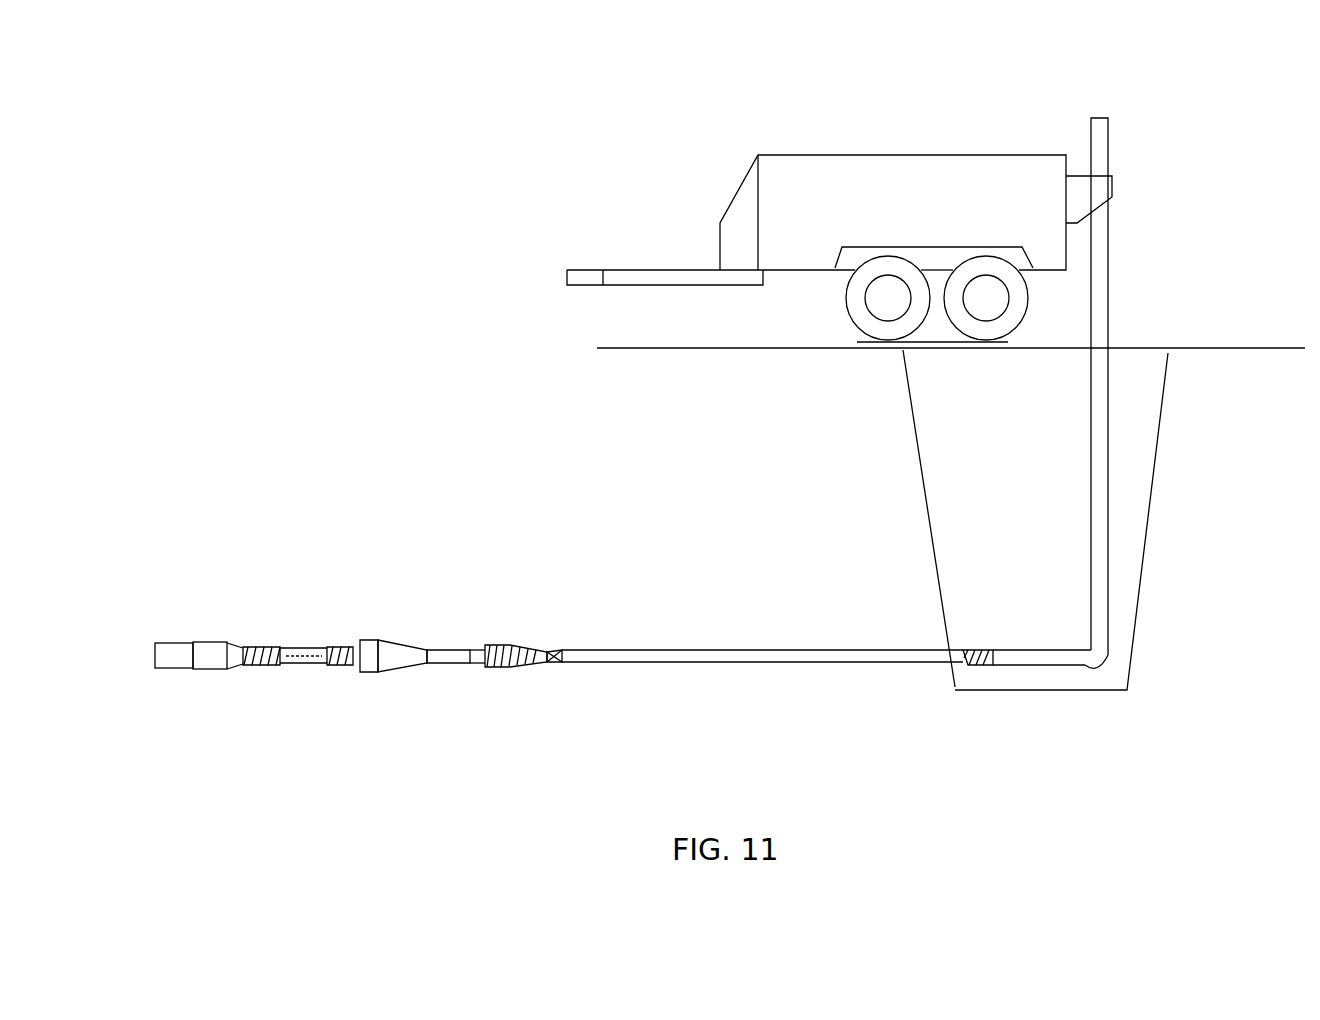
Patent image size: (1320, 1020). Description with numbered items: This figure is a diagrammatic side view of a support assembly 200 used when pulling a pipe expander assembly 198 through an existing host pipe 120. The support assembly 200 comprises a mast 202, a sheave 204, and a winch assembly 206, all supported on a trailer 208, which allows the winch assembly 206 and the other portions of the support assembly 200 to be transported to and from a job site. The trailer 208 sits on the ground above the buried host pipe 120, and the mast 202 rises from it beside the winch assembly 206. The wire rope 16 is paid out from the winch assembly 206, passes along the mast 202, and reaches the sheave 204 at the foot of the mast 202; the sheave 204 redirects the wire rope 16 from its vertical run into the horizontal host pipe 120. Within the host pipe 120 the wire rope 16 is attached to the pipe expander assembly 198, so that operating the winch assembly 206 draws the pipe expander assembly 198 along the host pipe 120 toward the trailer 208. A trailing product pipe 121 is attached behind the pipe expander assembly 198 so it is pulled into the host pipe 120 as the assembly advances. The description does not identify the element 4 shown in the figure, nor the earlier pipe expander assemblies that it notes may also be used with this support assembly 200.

The ground surface 4 is at (951, 377).
The wire rope 16 is at (1035, 541).
The host pipe 120 is at (826, 628).
The product pipe 121 is at (170, 630).
The pipe expander assembly 198 is at (402, 597).
The support assembly 200 is at (878, 370).
The mast 202 is at (1146, 386).
The sheave 204 is at (1151, 676).
The winch assembly 206 is at (839, 193).
The trailer 208 is at (845, 313).